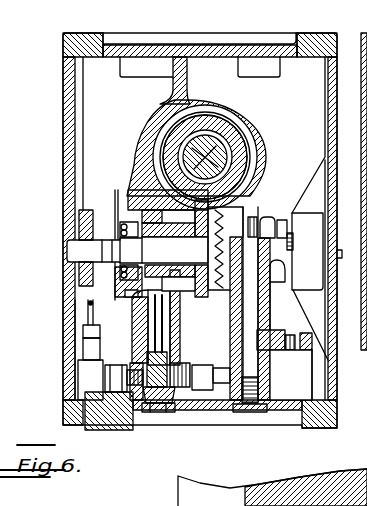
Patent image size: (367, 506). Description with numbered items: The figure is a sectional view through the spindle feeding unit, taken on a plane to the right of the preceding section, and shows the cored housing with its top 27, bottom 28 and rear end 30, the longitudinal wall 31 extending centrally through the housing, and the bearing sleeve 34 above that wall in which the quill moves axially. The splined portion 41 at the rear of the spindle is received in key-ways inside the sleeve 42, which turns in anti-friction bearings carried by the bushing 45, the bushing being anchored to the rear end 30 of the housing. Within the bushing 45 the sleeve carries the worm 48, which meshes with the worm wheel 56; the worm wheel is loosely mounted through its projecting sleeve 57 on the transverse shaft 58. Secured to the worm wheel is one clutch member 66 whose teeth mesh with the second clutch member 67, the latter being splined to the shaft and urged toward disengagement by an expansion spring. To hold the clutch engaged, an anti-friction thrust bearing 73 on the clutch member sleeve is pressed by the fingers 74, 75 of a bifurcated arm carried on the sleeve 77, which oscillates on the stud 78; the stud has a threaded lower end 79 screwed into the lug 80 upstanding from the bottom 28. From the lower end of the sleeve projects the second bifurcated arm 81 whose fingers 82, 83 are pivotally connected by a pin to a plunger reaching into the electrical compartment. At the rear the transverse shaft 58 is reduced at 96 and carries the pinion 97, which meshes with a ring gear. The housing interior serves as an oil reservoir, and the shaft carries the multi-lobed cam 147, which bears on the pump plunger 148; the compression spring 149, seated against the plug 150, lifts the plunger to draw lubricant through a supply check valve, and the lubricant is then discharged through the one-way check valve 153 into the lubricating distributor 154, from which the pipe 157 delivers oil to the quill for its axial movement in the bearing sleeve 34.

The top 27 is at (190, 55).
The bottom 28 is at (207, 404).
The rear end 30 is at (231, 270).
The wall 31 is at (188, 80).
The bearing sleeve 34 is at (228, 117).
The splined portion 41 is at (183, 157).
The sleeve 42 is at (225, 160).
The bushing 45 is at (246, 138).
The worm 48 is at (238, 152).
The worm wheel 56 is at (178, 322).
The projecting sleeve 57 is at (186, 270).
The transverse shaft 58 is at (102, 243).
The clutch member 66 is at (226, 290).
The second clutch member 67 is at (244, 217).
The anti-friction thrust bearing 73 is at (273, 217).
The finger 74 is at (282, 219).
The finger 75 is at (283, 283).
The sleeve 77 is at (232, 337).
The stud 78 is at (265, 217).
The threaded lower end 79 is at (242, 410).
The lug 80 is at (268, 360).
The second bifurcated arm 81 is at (284, 334).
The finger 82 is at (301, 333).
The finger 83 is at (306, 375).
The reduced rear end 96 is at (75, 252).
The pinion 97 is at (82, 284).
The multi-lobed cam 147 is at (161, 245).
The pump plunger 148 is at (181, 347).
The compression spring 149 is at (160, 412).
The plug 150 is at (163, 412).
The one-way check valve 153 is at (118, 365).
The lubricating distributor 154 is at (90, 388).
The pipe 157 is at (88, 320).